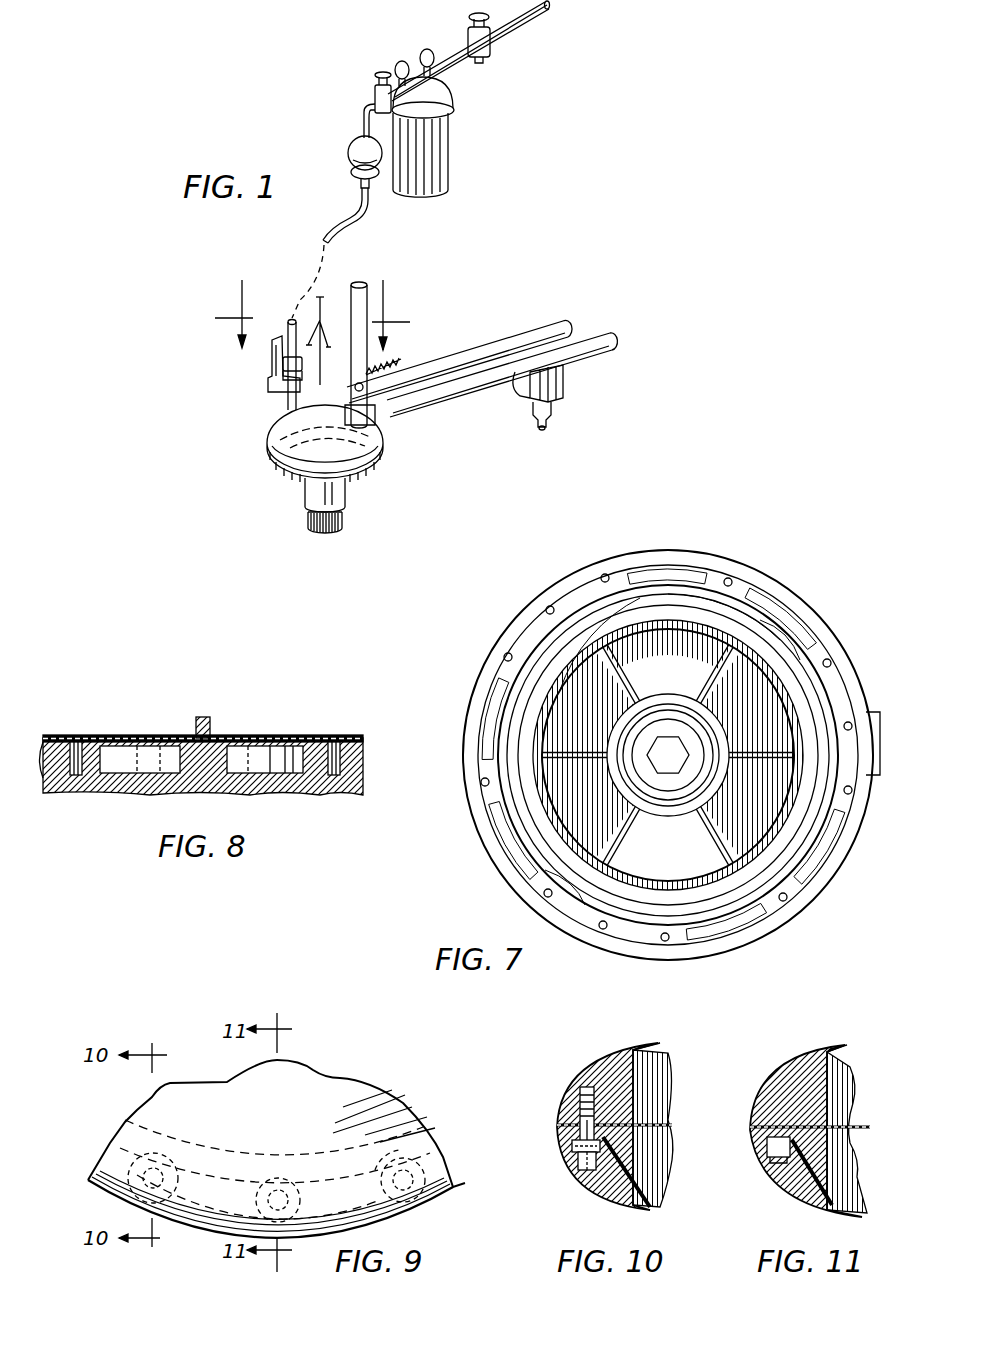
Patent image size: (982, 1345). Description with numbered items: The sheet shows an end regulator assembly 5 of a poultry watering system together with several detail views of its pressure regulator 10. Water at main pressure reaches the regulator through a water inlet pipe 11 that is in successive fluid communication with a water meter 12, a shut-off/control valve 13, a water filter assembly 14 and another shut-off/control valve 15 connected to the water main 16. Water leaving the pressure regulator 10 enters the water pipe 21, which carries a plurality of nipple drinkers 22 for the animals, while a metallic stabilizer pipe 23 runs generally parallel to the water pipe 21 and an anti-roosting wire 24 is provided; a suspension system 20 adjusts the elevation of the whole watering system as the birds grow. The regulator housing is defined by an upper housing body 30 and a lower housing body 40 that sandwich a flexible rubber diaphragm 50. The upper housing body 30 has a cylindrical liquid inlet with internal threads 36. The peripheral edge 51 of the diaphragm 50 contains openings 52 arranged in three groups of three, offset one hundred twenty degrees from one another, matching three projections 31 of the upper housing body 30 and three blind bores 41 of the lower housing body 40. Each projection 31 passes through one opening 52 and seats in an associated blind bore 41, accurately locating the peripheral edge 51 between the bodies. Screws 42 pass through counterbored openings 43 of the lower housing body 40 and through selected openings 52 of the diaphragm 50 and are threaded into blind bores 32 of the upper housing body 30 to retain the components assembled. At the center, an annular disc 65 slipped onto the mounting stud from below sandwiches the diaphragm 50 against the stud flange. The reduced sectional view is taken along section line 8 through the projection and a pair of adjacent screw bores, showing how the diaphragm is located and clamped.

In FIG. 1, the end regulator assembly 5 is at (507, 216).
In FIG. 1, the pressure regulator 10 is at (278, 493).
In FIG. 1, the water inlet pipe 11 is at (333, 215).
In FIG. 1, the water meter 12 is at (348, 153).
In FIG. 1, the shut-off/control valve 13 is at (375, 97).
In FIG. 1, the water filter assembly 14 is at (449, 148).
In FIG. 1, the shut-off/control valve 15 is at (488, 56).
In FIG. 1, the supply pipe 16 is at (517, 33).
In FIG. 1, the suspension system 20 is at (346, 267).
In FIG. 1, the water pipe 21 is at (590, 357).
In FIG. 1, the nipple drinker 22 is at (550, 402).
In FIG. 1, the stabilizer pipe 23 is at (481, 344).
In FIG. 1, the anti-roosting wire 24 is at (398, 360).
In FIG. 1, the upper housing body 30 is at (284, 426).
In FIG. 7, the upper housing body 30 is at (759, 526).
In FIG. 8, the upper housing body 30 is at (114, 800).
In FIG. 9, the upper housing body 30 is at (319, 1092).
In FIG. 10, the upper housing body 30 is at (596, 1057).
In FIG. 11, the upper housing body 30 is at (789, 1057).
In FIG. 7, the projection 31 is at (548, 607).
In FIG. 8, the projection 31 is at (203, 717).
In FIG. 9, the projection 31 is at (283, 1187).
In FIG. 11, the projection 31 is at (767, 1140).
In FIG. 7, the blind bore 32 is at (605, 574).
In FIG. 8, the blind bore 32 is at (92, 762).
In FIG. 9, the blind bore 32 is at (165, 1162).
In FIG. 10, the blind bore 32 is at (585, 1092).
In FIG. 1, the internal threads 36 is at (286, 401).
In FIG. 1, the lower housing body 40 is at (347, 492).
In FIG. 10, the lower housing body 40 is at (648, 1214).
In FIG. 11, the blind bore 41 is at (777, 1167).
In FIG. 10, the screw 42 is at (572, 1151).
In FIG. 10, the counterbored opening 43 is at (588, 1172).
In FIG. 7, the diaphragm 50 is at (784, 849).
In FIG. 8, the diaphragm 50 is at (285, 734).
In FIG. 10, the diaphragm 50 is at (659, 1124).
In FIG. 11, the diaphragm 50 is at (853, 1124).
In FIG. 8, the peripheral edge 51 is at (249, 738).
In FIG. 10, the peripheral edge 51 is at (654, 1138).
In FIG. 11, the peripheral edge 51 is at (838, 1147).
In FIG. 8, the opening 52 is at (74, 742).
In FIG. 10, the opening 52 is at (652, 1096).
In FIG. 11, the opening 52 is at (787, 1124).
In FIG. 7, the annular disc 65 is at (761, 709).
In FIG. 7, the section line 8- 8 is at (545, 843).